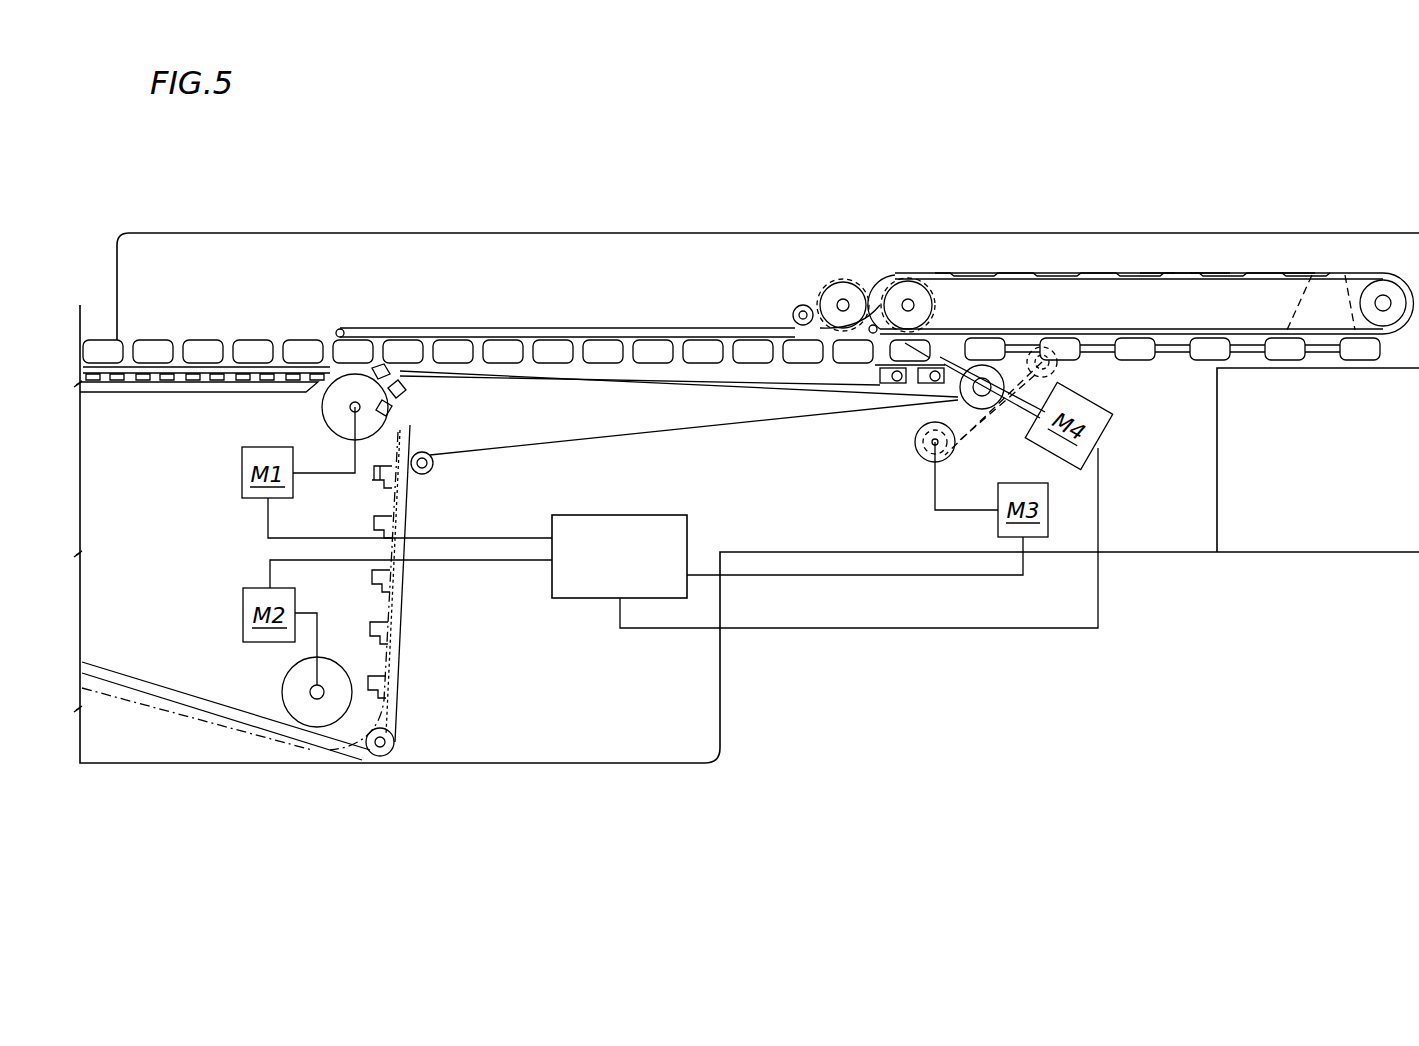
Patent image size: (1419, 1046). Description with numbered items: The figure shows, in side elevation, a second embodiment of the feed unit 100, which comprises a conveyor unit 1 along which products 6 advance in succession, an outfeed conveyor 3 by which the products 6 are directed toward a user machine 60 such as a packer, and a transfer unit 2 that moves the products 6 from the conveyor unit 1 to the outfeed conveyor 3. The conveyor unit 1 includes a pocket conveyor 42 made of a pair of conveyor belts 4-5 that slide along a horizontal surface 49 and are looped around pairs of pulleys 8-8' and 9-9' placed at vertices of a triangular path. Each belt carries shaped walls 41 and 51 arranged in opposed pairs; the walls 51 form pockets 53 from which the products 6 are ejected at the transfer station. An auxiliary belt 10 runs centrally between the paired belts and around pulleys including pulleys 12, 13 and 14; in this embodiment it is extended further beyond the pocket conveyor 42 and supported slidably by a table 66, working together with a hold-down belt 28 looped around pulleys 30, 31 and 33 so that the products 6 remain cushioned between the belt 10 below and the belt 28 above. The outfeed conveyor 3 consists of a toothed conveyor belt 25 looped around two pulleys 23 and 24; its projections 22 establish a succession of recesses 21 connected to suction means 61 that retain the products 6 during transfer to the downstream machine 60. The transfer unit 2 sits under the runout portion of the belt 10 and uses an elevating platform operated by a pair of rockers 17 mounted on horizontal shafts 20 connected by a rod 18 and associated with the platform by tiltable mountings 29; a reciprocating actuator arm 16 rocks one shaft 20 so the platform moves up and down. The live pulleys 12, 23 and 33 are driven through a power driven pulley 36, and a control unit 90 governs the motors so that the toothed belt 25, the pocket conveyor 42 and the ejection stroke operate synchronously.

The conveyor unit 1 is at (97, 285).
The transfer unit 2 is at (977, 446).
The outfeed conveyor 3 is at (1244, 262).
The conveyor belts 4-5 is at (132, 676).
The products 6 is at (298, 350).
The pair of pulleys 8-8' is at (303, 423).
The pair of pulleys 9-9' is at (298, 723).
The auxiliary belt 10 is at (597, 440).
The pulley 12 is at (993, 368).
The pulley 13 is at (435, 464).
The pulley 14 is at (381, 757).
The reciprocating actuator arm 16 is at (1037, 395).
The rockers 17 is at (865, 285).
The rod 18 is at (931, 282).
The horizontal shafts 20 is at (930, 365).
The recesses 21 is at (1199, 268).
The projections 22 is at (1158, 268).
The pulley 23 is at (907, 290).
The pulley 24 is at (1384, 278).
The toothed conveyor belt 25 is at (1298, 268).
The hold-down belt 28 is at (482, 326).
The mountings 29 is at (878, 378).
The pulley 30 is at (338, 329).
The pulley 31 is at (795, 312).
The pulley 33 is at (825, 290).
The power driven pulley 36 is at (930, 462).
The shaped walls 41 is at (400, 420).
The conveyor 42 is at (136, 386).
The horizontal surface 49 is at (191, 396).
The shaped walls 51 is at (390, 472).
The pocket 53 is at (386, 606).
The user machine 60 is at (1314, 448).
The suction means 61 is at (1345, 275).
The table 66 is at (633, 380).
The control unit 90 is at (597, 570).
The feed unit 100 is at (780, 205).